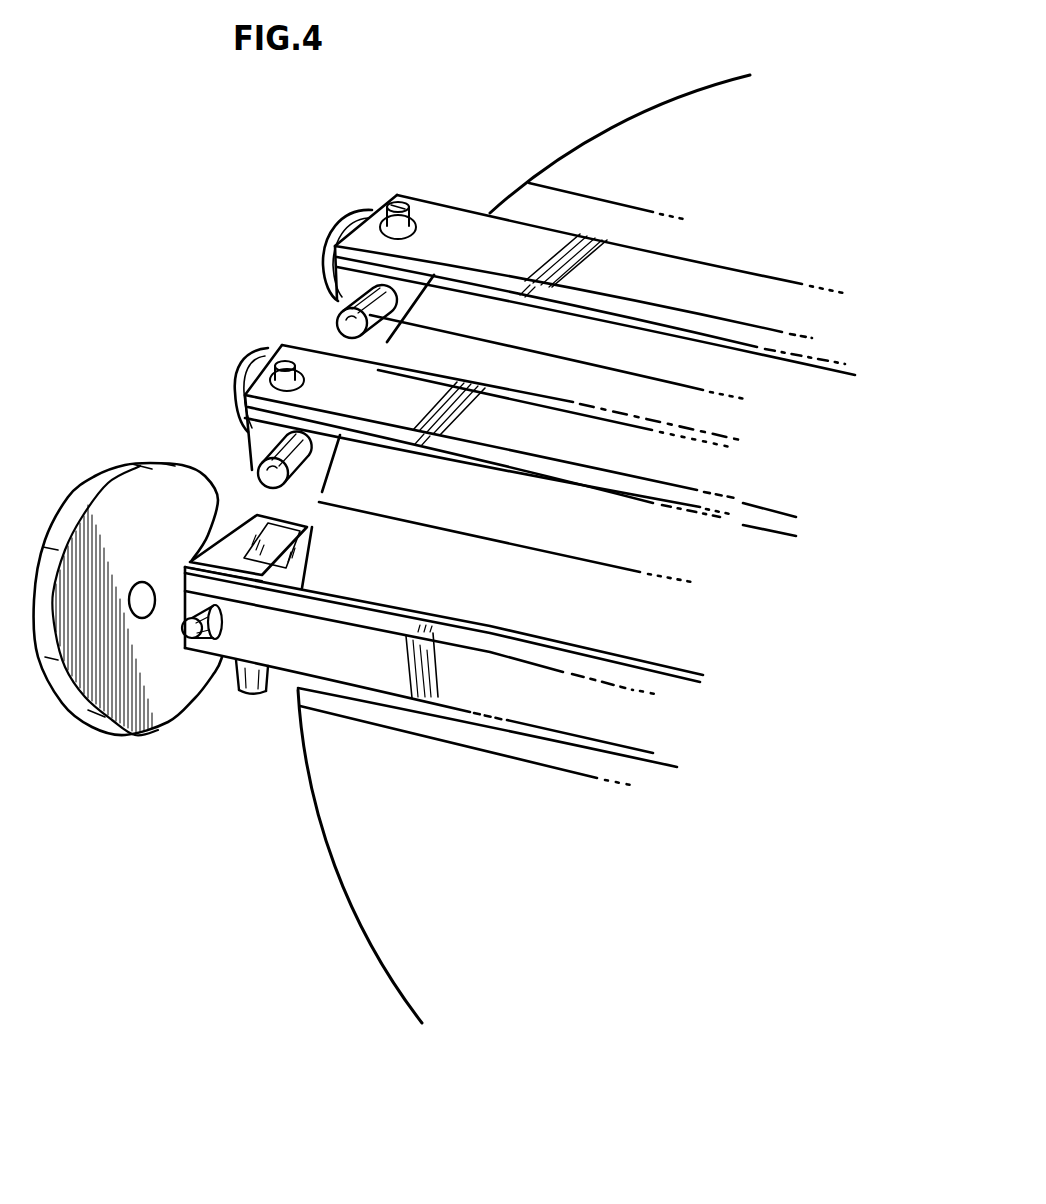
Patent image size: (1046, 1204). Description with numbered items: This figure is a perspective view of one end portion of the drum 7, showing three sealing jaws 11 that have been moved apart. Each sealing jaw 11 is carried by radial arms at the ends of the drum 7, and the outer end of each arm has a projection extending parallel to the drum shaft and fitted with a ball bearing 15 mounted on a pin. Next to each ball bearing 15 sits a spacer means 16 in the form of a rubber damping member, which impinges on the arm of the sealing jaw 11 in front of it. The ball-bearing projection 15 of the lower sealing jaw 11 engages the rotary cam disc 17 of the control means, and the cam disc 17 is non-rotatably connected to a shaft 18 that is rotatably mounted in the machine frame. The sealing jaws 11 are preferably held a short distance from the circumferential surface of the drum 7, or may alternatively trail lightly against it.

The drum 7 is at (626, 142).
The sealing jaw 11 is at (447, 222).
The ball bearing 15 is at (332, 240).
The spacer means 16 is at (340, 314).
The cam disc 17 is at (105, 468).
The shaft 18 is at (143, 584).